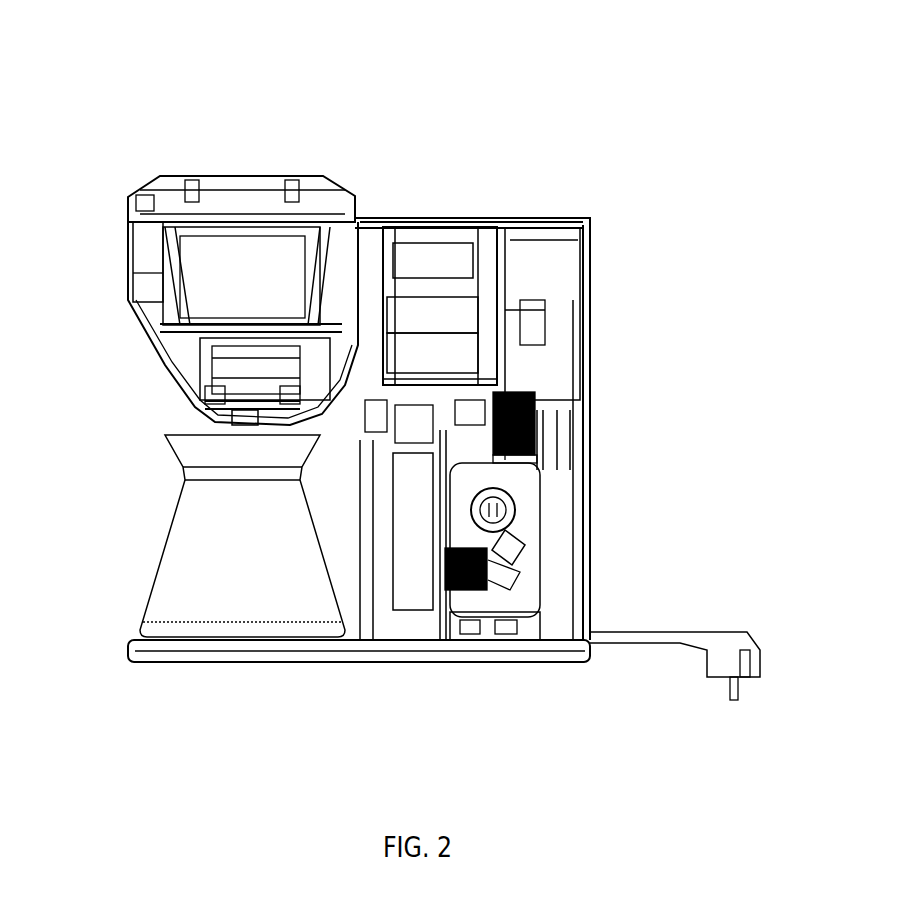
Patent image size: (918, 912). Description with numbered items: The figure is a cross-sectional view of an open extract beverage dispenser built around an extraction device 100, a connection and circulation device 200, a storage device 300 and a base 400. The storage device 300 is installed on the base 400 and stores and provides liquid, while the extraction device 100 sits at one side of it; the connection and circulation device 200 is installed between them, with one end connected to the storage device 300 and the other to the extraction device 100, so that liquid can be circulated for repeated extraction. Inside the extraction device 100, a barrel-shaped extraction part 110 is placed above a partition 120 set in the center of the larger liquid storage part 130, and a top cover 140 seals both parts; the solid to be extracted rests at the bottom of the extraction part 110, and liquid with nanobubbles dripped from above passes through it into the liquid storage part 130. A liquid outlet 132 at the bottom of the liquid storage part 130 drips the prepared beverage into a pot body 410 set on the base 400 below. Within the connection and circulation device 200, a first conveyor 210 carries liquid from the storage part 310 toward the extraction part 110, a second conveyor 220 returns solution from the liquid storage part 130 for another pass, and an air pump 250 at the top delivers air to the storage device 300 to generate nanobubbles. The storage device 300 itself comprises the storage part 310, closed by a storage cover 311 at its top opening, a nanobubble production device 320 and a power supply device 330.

The extraction device 100 is at (210, 175).
The extraction part 110 is at (273, 260).
The top cover 140 is at (275, 187).
The liquid storage part 130 is at (158, 285).
The partition 120 is at (228, 328).
The liquid outlet 132 is at (245, 418).
The connection and circulation device 200 is at (377, 235).
The air pump 250 is at (432, 260).
The first conveyor 210 is at (470, 322).
The second conveyor 220 is at (447, 345).
The storage device 300 is at (598, 212).
The storage cover 311 is at (507, 223).
The storage part 310 is at (562, 300).
The nanobubble production device 320 is at (522, 530).
The power supply device 330 is at (510, 622).
The base 400 is at (353, 648).
The pot body 410 is at (272, 600).